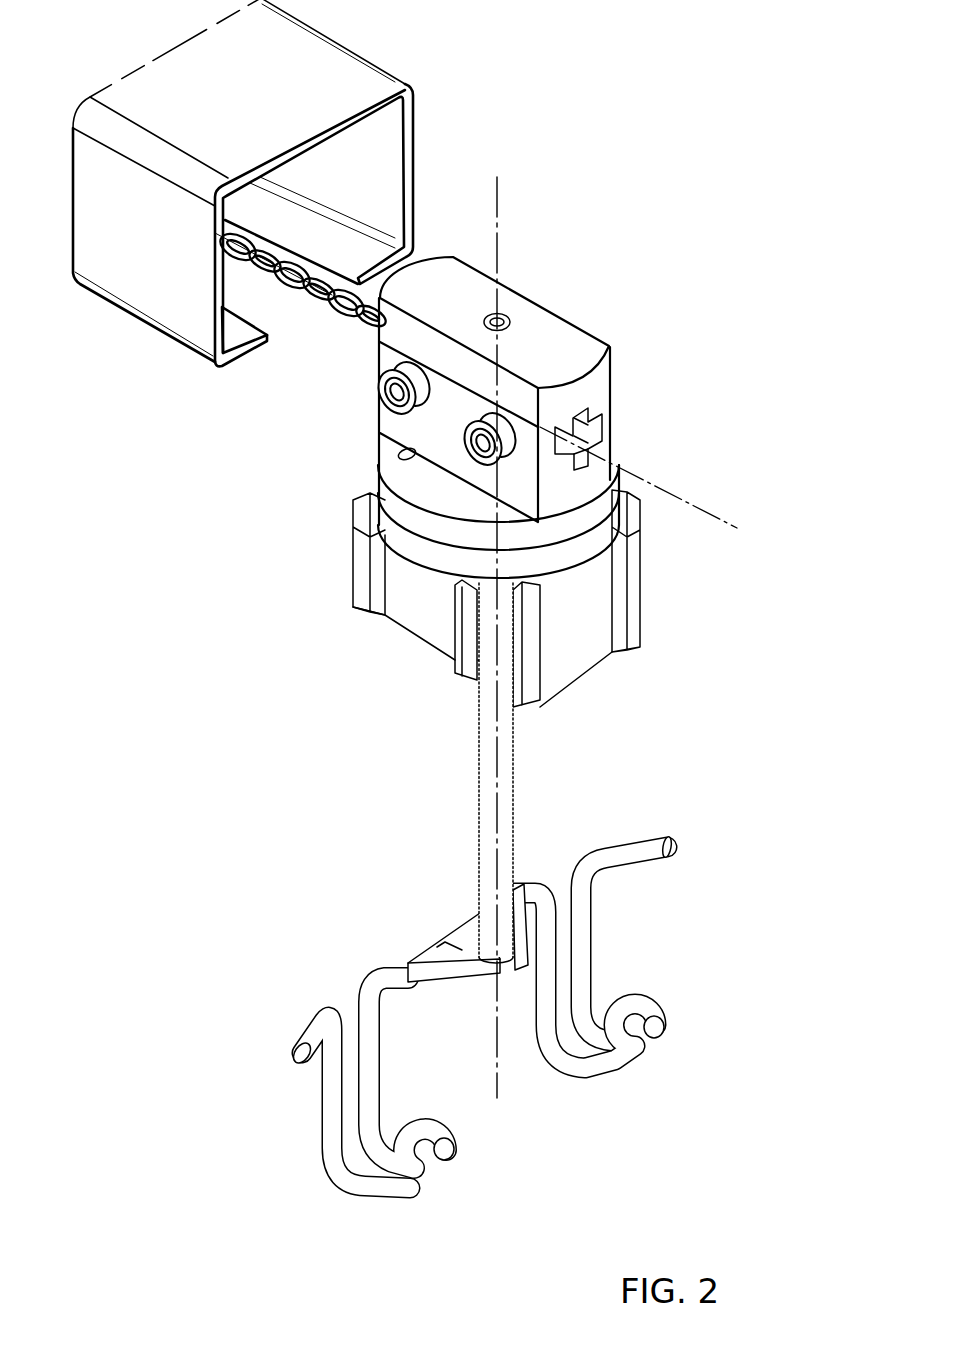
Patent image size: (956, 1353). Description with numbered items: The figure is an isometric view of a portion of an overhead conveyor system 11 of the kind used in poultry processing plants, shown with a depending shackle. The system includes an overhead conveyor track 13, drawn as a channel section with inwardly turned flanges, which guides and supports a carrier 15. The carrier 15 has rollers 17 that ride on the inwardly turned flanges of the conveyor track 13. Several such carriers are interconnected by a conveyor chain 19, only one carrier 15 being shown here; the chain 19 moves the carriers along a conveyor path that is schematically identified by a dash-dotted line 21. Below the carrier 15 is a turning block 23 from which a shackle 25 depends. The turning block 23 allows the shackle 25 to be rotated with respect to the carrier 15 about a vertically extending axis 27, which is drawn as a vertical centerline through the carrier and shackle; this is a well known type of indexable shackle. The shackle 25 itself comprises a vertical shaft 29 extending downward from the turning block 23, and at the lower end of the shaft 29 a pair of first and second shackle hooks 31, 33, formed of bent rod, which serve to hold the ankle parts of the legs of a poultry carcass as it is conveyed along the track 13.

The overhead conveyor system 11 is at (515, 223).
The overhead conveyor track 13 is at (415, 173).
The carrier 15 is at (597, 468).
The rollers 17 is at (466, 437).
The conveyor chain 19 is at (347, 320).
The dash-dotted line 21 is at (720, 513).
The turning block 23 is at (573, 660).
The shackle 25 is at (358, 972).
The vertically extending axis 27 is at (498, 255).
The vertical shaft 29 is at (488, 766).
The first shackle hook 31 is at (443, 1152).
The second shackle hook 33 is at (658, 1030).